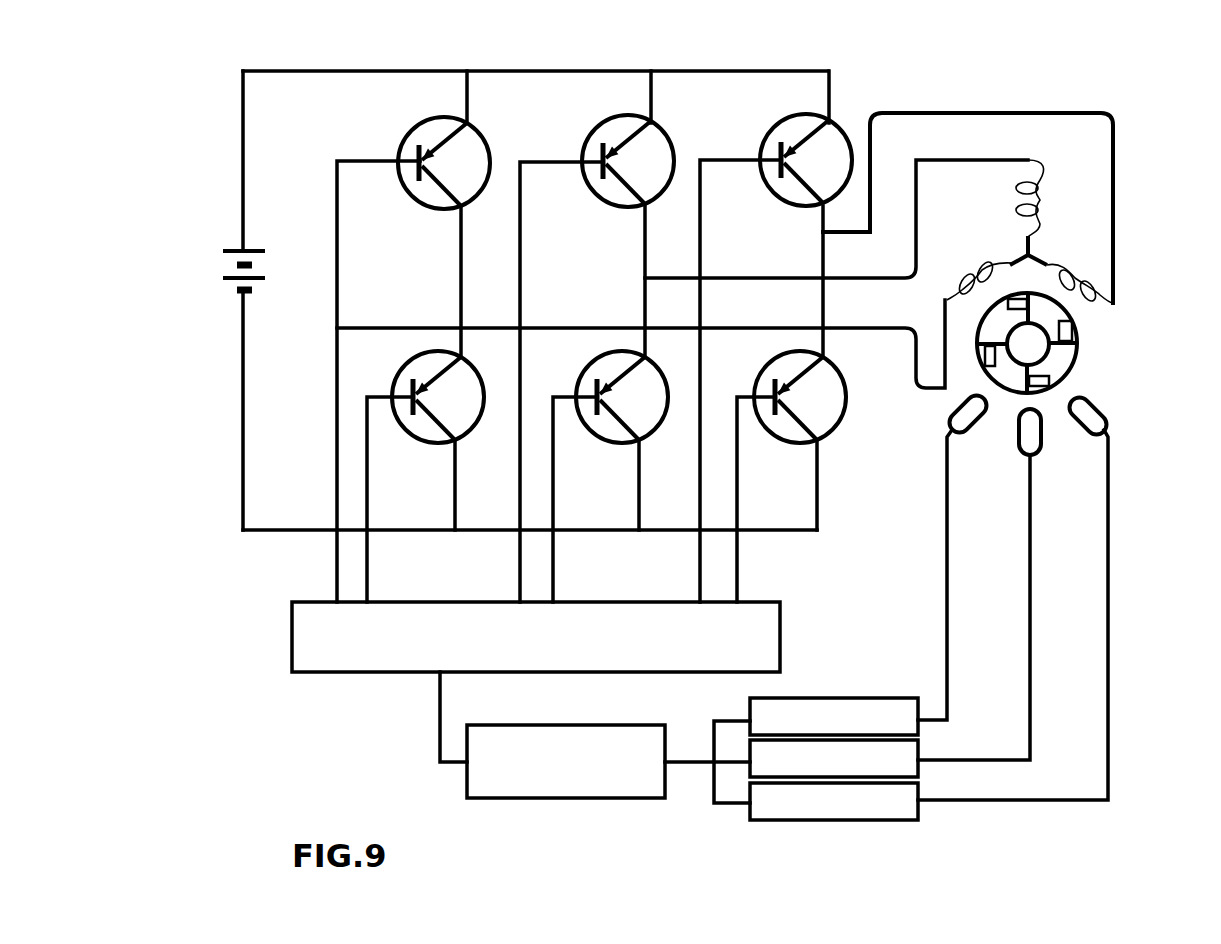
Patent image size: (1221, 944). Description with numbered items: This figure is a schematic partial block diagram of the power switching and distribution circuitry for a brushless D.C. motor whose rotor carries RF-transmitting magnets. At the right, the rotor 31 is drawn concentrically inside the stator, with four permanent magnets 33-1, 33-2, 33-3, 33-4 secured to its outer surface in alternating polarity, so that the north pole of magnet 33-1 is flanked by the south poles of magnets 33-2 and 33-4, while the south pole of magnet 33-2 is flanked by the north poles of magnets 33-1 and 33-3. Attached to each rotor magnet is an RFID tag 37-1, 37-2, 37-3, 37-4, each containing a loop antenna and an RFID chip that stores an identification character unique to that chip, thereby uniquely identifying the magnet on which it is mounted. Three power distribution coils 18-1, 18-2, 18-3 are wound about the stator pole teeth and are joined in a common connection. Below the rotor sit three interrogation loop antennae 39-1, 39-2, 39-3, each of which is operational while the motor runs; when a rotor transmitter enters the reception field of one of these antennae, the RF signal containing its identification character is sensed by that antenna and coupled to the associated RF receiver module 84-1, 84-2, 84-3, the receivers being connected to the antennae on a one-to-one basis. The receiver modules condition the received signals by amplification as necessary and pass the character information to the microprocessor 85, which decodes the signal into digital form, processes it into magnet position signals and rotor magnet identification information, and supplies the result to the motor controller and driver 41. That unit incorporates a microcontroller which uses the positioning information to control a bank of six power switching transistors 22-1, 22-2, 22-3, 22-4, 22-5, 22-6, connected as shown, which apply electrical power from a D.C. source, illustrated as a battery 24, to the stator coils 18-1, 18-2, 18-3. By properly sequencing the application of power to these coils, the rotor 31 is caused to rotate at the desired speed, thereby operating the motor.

The power switching transistor 22-1 is at (462, 149).
The power switching transistor 22-2 is at (648, 140).
The power switching transistor 22-3 is at (831, 140).
The power switching transistor 22-4 is at (460, 383).
The power switching transistor 22-5 is at (598, 372).
The power switching transistor 22-6 is at (812, 383).
The battery 24 is at (228, 268).
The power distribution coil 18-1 is at (1045, 190).
The power distribution coil 18-2 is at (1060, 268).
The power distribution coil 18-3 is at (982, 265).
The rotor 31 is at (1030, 348).
The permanent magnet 33-1 is at (986, 330).
The permanent magnet 33-2 is at (1062, 320).
The permanent magnet 33-3 is at (1067, 358).
The permanent magnet 33-4 is at (1016, 378).
The RFID tag 37-1 is at (1032, 300).
The RFID tag 37-2 is at (1077, 332).
The RFID tag 37-3 is at (1053, 388).
The RFID tag 37-4 is at (987, 368).
The loop antenna 39-1 is at (1083, 445).
The loop antenna 39-2 is at (1027, 445).
The loop antenna 39-3 is at (967, 428).
The motor controller and driver 41 is at (772, 622).
The RF receiver module 84-1 is at (817, 703).
The RF receiver module 84-2 is at (913, 766).
The RF receiver module 84-3 is at (850, 815).
The microprocessor 85 is at (527, 785).